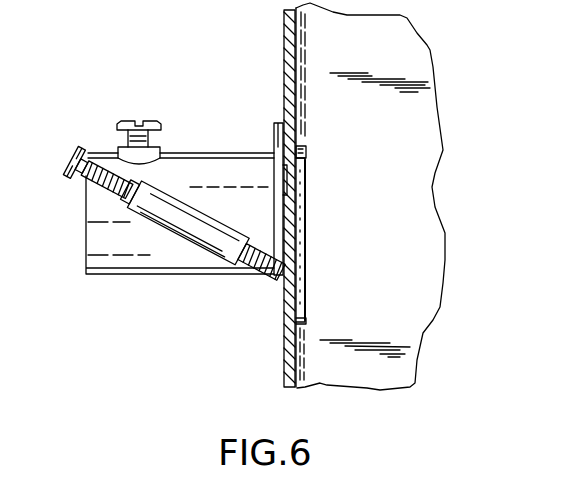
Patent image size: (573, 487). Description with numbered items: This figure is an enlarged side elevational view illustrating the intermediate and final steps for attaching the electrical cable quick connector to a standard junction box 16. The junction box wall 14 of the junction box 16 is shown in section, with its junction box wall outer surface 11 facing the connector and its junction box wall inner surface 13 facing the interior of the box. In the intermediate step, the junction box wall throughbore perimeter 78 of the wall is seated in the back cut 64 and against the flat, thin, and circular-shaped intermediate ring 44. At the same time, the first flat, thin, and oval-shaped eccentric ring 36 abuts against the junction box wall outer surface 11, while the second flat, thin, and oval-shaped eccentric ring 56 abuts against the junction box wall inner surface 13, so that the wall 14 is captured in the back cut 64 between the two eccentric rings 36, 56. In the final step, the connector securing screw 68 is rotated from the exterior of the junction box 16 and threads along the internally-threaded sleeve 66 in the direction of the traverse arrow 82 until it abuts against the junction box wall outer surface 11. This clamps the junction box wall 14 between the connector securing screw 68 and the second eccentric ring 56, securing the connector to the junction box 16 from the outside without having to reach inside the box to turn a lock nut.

The junction box 16 is at (412, 50).
The junction box wall 14 is at (287, 49).
The junction box wall outer surface 11 is at (289, 92).
The junction box wall inner surface 13 is at (296, 83).
The first flat, thin, and oval-shaped eccentric ring 36 is at (277, 137).
The junction box wall throughbore perimeter 78 is at (283, 183).
The back cut 64 is at (298, 155).
The second flat, thin, and oval-shaped eccentric ring 56 is at (306, 180).
The intermediate ring 44 is at (296, 220).
The traverse arrow 82 is at (35, 143).
The connector securing screw 68 is at (86, 150).
The internally-threaded sleeve 66 is at (182, 230).